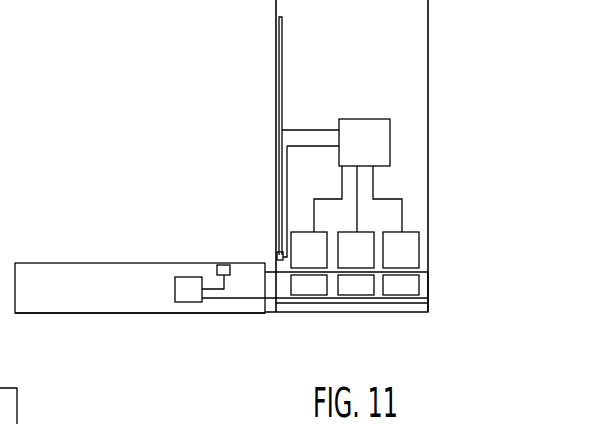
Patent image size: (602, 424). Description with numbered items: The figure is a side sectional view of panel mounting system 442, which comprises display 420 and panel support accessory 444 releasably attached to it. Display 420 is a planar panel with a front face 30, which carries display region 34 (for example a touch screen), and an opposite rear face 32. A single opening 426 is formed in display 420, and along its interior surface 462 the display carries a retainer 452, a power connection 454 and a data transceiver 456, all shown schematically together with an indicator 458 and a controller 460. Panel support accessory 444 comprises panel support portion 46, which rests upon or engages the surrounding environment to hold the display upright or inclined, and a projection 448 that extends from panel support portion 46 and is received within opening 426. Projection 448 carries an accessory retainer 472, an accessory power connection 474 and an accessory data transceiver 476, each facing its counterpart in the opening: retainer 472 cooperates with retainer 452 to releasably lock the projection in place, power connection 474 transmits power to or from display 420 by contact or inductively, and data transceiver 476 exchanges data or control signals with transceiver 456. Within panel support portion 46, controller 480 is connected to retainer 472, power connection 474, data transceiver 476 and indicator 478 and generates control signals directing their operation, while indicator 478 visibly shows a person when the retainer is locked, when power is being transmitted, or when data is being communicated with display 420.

The panel mounting system 442 is at (101, 114).
The front face 30 is at (242, 60).
The display region 34 is at (278, 117).
The display 420 is at (429, 86).
The rear face 32 is at (496, 117).
The controller 460 is at (375, 119).
The indicator 458 is at (274, 251).
The retainer 452 is at (302, 231).
The power connection 454 is at (370, 232).
The data transceiver 456 is at (419, 256).
The interior surface 462 is at (420, 270).
The accessory retainer 472 is at (295, 300).
The accessory power connection 474 is at (367, 297).
The accessory data transceiver 476 is at (410, 296).
The opening 426 is at (307, 301).
The projection 448 is at (312, 306).
The panel support accessory 444 is at (70, 261).
The panel support portion 46 is at (142, 313).
The controller 480 is at (187, 277).
The indicator 478 is at (222, 265).